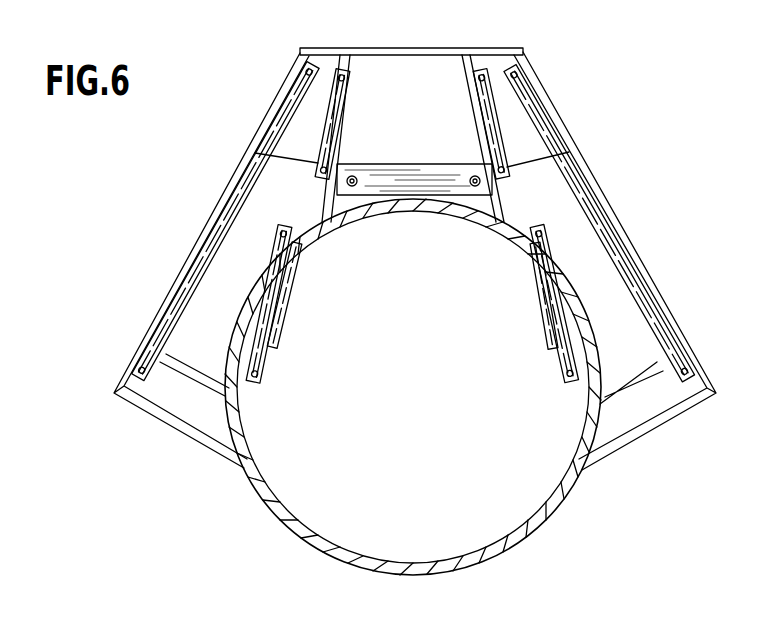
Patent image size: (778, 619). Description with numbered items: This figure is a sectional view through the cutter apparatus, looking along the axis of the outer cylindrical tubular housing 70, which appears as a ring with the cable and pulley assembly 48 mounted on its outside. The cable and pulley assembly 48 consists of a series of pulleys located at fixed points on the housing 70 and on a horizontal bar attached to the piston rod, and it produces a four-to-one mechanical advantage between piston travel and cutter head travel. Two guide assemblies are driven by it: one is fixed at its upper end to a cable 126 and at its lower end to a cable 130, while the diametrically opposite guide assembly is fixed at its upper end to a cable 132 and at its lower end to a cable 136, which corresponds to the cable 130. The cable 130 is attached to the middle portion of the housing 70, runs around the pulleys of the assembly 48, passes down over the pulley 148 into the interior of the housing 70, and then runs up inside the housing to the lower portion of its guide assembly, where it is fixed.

The cable and pulley assembly 48 is at (415, 259).
The outer cylindrical tubular housing 70 is at (413, 387).
The cable 126 is at (260, 199).
The cable 132 is at (560, 223).
The cable 130 is at (273, 315).
The pulley 148 is at (297, 295).
The cable 136 is at (553, 319).